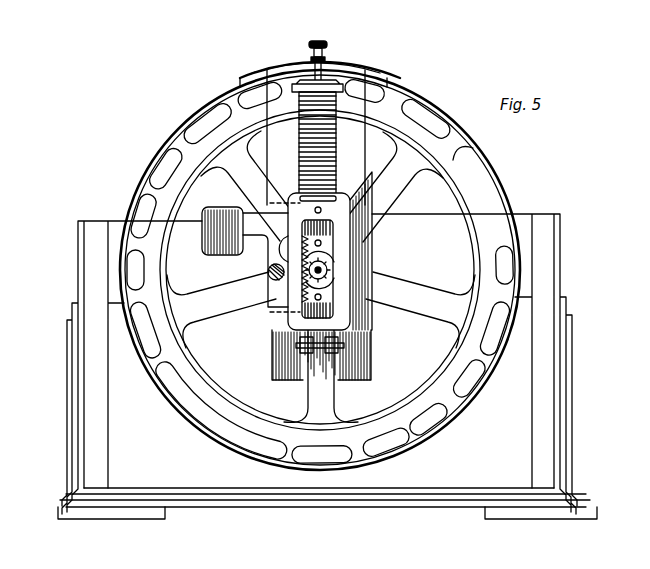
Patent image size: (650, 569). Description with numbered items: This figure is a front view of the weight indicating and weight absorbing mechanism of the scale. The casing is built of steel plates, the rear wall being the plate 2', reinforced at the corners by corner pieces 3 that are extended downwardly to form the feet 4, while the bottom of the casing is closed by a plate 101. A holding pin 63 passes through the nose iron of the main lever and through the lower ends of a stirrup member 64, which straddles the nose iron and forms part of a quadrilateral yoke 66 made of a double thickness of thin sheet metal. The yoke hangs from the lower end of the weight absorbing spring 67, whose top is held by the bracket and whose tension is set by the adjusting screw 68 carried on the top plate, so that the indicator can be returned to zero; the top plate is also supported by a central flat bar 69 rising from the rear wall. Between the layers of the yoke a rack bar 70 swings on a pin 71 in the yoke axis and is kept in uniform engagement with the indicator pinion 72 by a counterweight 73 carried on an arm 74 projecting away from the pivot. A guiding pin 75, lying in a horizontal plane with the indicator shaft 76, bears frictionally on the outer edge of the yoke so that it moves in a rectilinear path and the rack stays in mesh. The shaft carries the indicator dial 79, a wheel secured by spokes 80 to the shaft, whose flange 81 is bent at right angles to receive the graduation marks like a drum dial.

The steel plate 2' is at (326, 483).
The corner piece 3 is at (70, 428).
The foot 4 is at (64, 508).
The holding pin 63 is at (345, 345).
The stirrup member 64 is at (303, 337).
The yoke 66 is at (337, 262).
The spring 67 is at (346, 118).
The adjusting screw 68 is at (324, 43).
The central flat bar 69 is at (372, 132).
The rack bar 70 is at (283, 233).
The pin 71 is at (322, 209).
The indicator pinion 72 is at (334, 255).
The counterweight 73 is at (206, 207).
The arm 74 is at (290, 213).
The guiding pin 75 is at (267, 271).
The indicator shaft 76 is at (323, 272).
The indicator dial 79 is at (486, 184).
The spokes 80 is at (458, 165).
The flange 81 is at (508, 210).
The bottom plate 101 is at (300, 494).